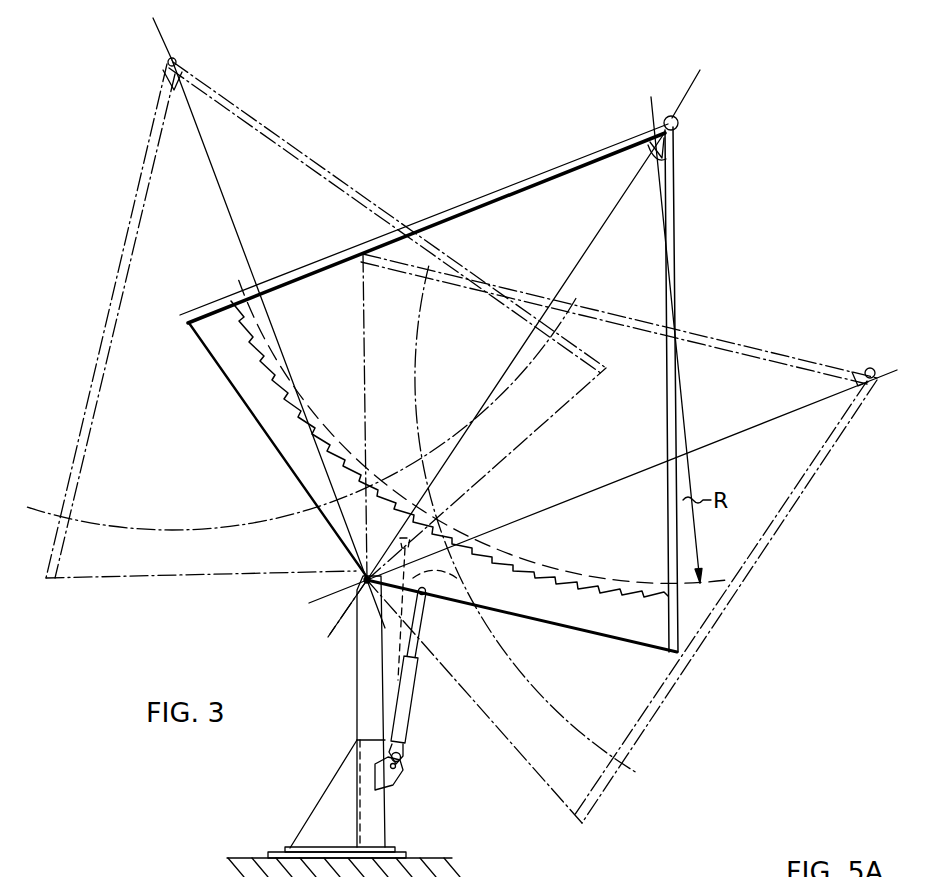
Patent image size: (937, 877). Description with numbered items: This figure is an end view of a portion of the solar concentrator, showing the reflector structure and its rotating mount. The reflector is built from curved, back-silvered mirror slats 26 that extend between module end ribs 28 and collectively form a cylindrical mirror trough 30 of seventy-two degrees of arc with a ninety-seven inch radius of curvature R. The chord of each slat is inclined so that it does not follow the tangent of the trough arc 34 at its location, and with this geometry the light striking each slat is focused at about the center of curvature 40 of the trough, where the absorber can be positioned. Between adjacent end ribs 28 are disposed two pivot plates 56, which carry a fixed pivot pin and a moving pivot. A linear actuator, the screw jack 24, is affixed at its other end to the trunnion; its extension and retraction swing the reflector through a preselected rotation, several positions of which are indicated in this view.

The screw jack 24 is at (410, 708).
The mirror slats 26 is at (303, 410).
The module end ribs 28 is at (237, 345).
The cylindrical mirror trough 30 is at (473, 532).
The trough arc 34 is at (237, 276).
The center of curvature 40 is at (664, 150).
The pivot plates 56 is at (450, 581).